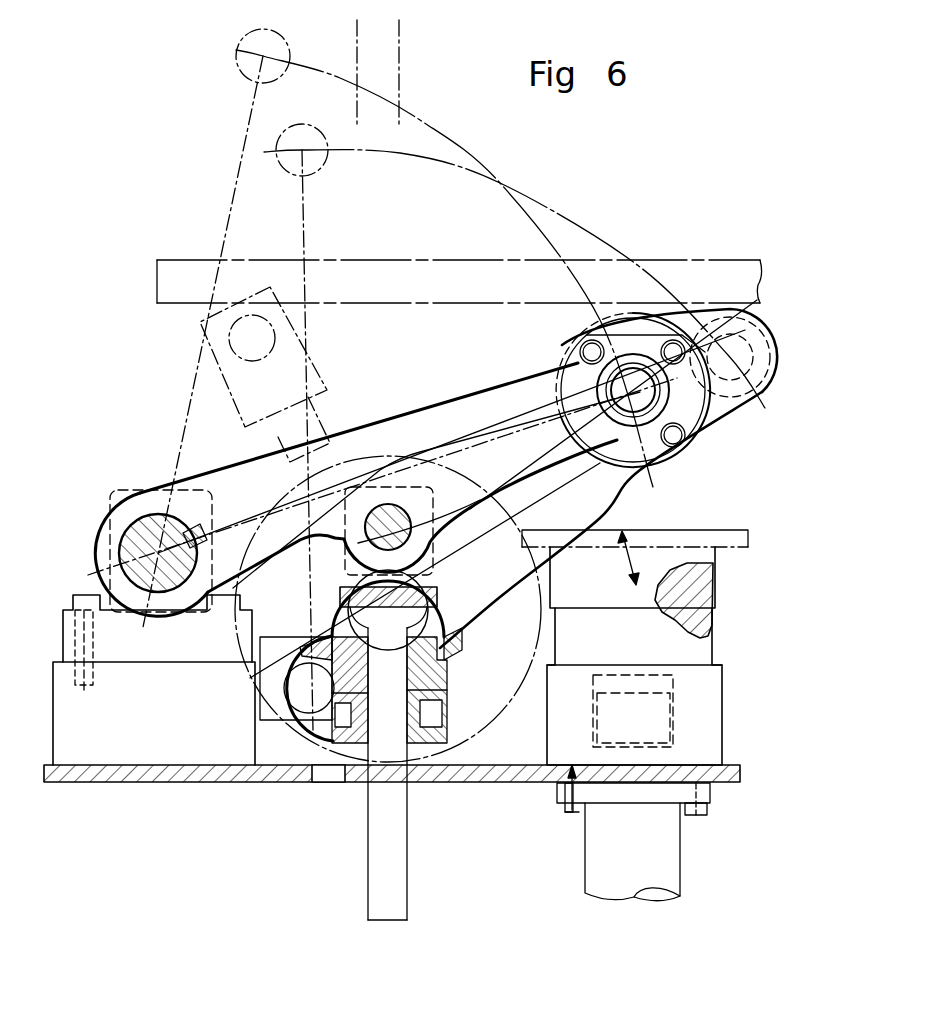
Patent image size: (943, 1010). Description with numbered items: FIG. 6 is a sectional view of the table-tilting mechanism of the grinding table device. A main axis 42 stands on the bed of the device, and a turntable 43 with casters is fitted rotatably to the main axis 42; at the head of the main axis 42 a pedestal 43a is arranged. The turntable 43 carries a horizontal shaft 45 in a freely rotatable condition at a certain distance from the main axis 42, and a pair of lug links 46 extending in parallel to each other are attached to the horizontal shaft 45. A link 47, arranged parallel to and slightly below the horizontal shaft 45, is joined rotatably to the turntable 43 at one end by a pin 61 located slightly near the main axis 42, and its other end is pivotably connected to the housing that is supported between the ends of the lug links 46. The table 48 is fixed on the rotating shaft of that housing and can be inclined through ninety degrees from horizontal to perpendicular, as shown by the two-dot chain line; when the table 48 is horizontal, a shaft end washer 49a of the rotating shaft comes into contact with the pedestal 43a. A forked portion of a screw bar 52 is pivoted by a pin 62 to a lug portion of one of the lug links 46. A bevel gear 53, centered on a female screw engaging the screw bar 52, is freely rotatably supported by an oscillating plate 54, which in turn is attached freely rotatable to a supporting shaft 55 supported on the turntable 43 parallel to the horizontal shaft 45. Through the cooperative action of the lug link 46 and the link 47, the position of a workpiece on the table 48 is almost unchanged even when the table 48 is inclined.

The main axis 42 is at (672, 849).
The turntable 43 is at (188, 785).
The pedestal 43a is at (700, 638).
The horizontal shaft 45 is at (115, 507).
The link 46 is at (455, 400).
The link 47 is at (730, 418).
The table 48 is at (700, 258).
The shaft end washer 49a is at (666, 562).
The screw bar 52 is at (405, 824).
The bevel gear 53 is at (447, 662).
The oscillating plate 54 is at (337, 785).
The supporting shaft 55 is at (458, 632).
The pin 61 is at (303, 710).
The pin 62 is at (387, 503).